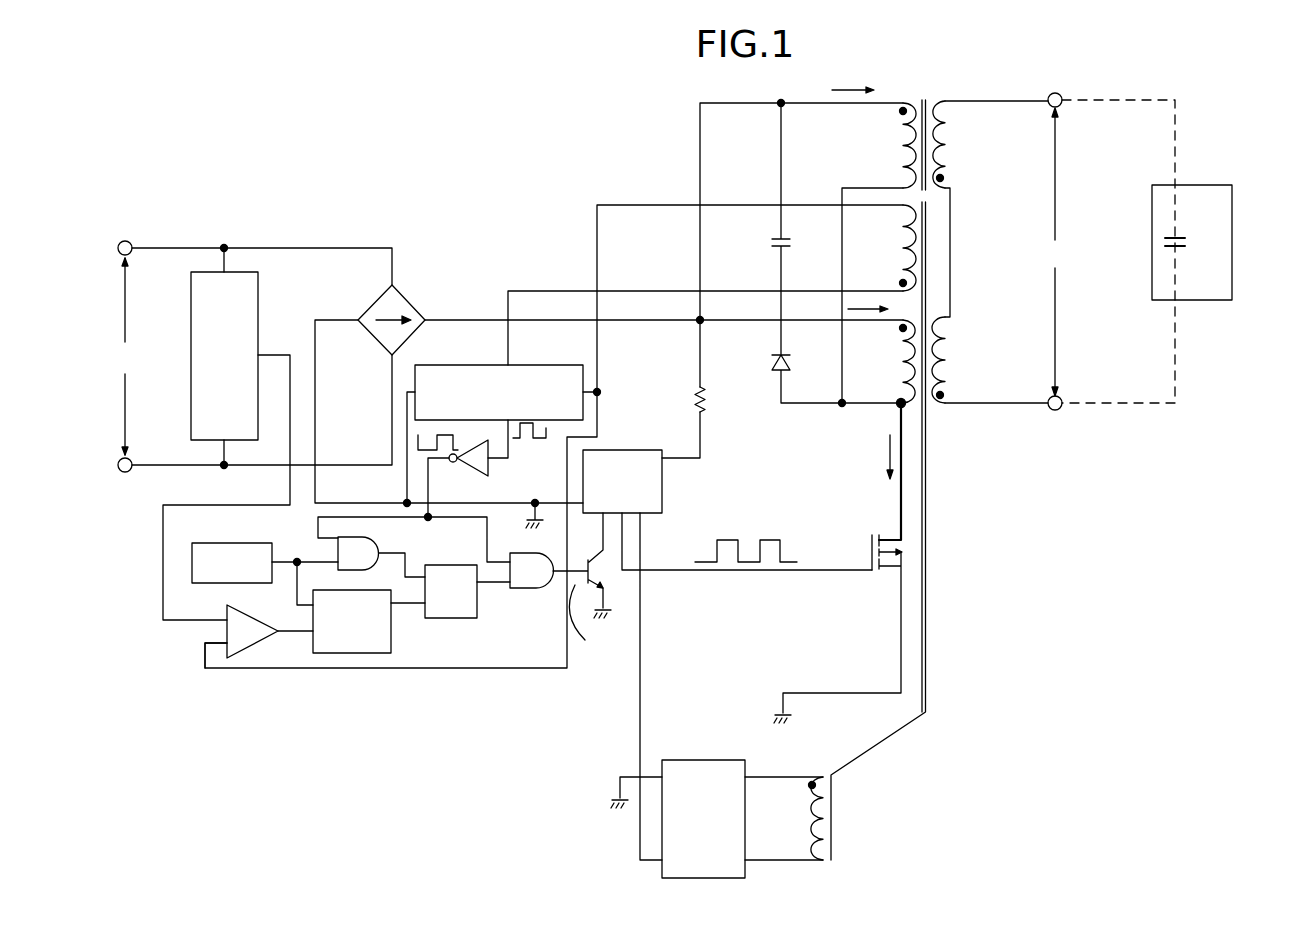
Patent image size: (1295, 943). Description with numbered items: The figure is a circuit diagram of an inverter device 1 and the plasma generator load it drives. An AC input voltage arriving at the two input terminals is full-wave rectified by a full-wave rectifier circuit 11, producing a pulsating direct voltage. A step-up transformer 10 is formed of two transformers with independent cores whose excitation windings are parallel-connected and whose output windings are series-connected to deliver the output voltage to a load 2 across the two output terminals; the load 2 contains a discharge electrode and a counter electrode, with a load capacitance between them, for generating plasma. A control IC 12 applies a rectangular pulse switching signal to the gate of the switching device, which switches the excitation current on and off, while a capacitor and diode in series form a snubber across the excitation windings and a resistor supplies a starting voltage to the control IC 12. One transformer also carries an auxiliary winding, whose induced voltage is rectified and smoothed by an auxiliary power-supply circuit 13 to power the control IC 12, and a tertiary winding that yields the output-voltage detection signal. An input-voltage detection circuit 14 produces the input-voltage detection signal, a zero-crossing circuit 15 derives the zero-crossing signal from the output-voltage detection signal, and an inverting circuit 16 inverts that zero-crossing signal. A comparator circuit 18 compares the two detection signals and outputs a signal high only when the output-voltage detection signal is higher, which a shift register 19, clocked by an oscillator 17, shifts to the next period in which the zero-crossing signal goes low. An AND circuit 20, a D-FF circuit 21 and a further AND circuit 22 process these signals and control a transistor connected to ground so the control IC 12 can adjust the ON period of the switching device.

The inverter device 1 is at (447, 193).
The load 2 is at (1232, 237).
The step-up transformer 10 is at (965, 245).
The full-wave rectifier circuit 11 is at (410, 302).
The control IC 12 is at (662, 482).
The auxiliary power-supply circuit 13 is at (700, 758).
The input-voltage detection circuit 14 is at (258, 298).
The zero-crossing circuit 15 is at (522, 365).
The inverting circuit 16 is at (478, 475).
The oscillator 17 is at (220, 543).
The comparator circuit 18 is at (258, 648).
The shift register 19 is at (352, 590).
The AND circuit 20 is at (370, 537).
The D-FF circuit 21 is at (450, 618).
The AND circuit 22 is at (535, 588).